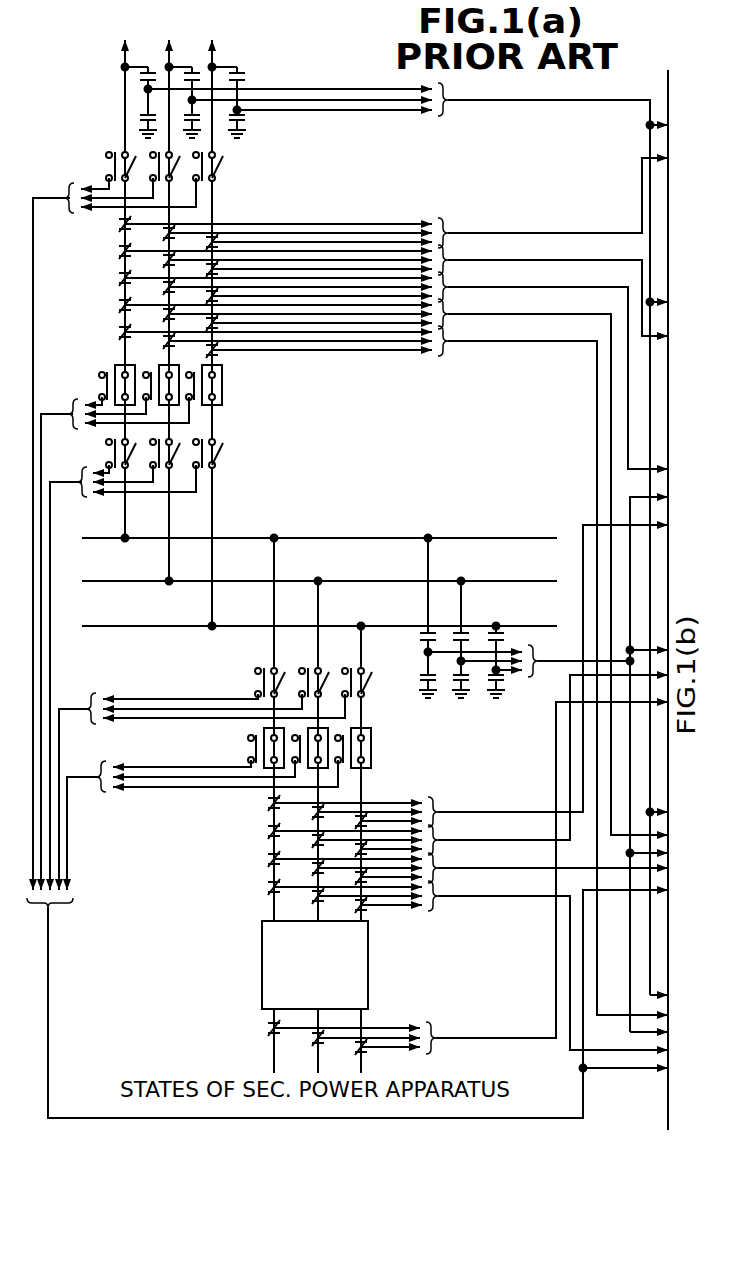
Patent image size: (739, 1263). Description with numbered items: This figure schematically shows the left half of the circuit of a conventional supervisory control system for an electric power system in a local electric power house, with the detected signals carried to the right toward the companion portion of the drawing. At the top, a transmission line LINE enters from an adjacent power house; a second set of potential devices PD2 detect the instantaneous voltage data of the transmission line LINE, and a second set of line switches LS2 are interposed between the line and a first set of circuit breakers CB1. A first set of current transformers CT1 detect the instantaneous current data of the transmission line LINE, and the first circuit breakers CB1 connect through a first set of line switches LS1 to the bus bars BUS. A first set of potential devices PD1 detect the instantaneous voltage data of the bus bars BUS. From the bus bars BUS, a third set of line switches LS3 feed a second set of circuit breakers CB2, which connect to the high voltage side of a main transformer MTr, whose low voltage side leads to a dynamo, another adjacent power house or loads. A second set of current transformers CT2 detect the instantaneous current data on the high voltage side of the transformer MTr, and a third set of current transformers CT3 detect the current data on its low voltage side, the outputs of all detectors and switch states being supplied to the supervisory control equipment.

The transmission line LINE is at (195, 42).
The second set of potential devices PD2 is at (386, 528).
The second set of line switches LS2 is at (150, 521).
The first set of current transformers CT1 is at (393, 586).
The first set of circuit breakers CB1 is at (157, 627).
The first set of line switches LS1 is at (160, 664).
The bus bars BUS is at (319, 570).
The first set of potential devices PD1 is at (543, 764).
The third set of line switches LS3 is at (215, 779).
The second set of circuit breakers CB2 is at (219, 809).
The second set of current transformers CT2 is at (432, 787).
The main transformer MTr is at (315, 965).
The third set of current transformers CT3 is at (432, 887).